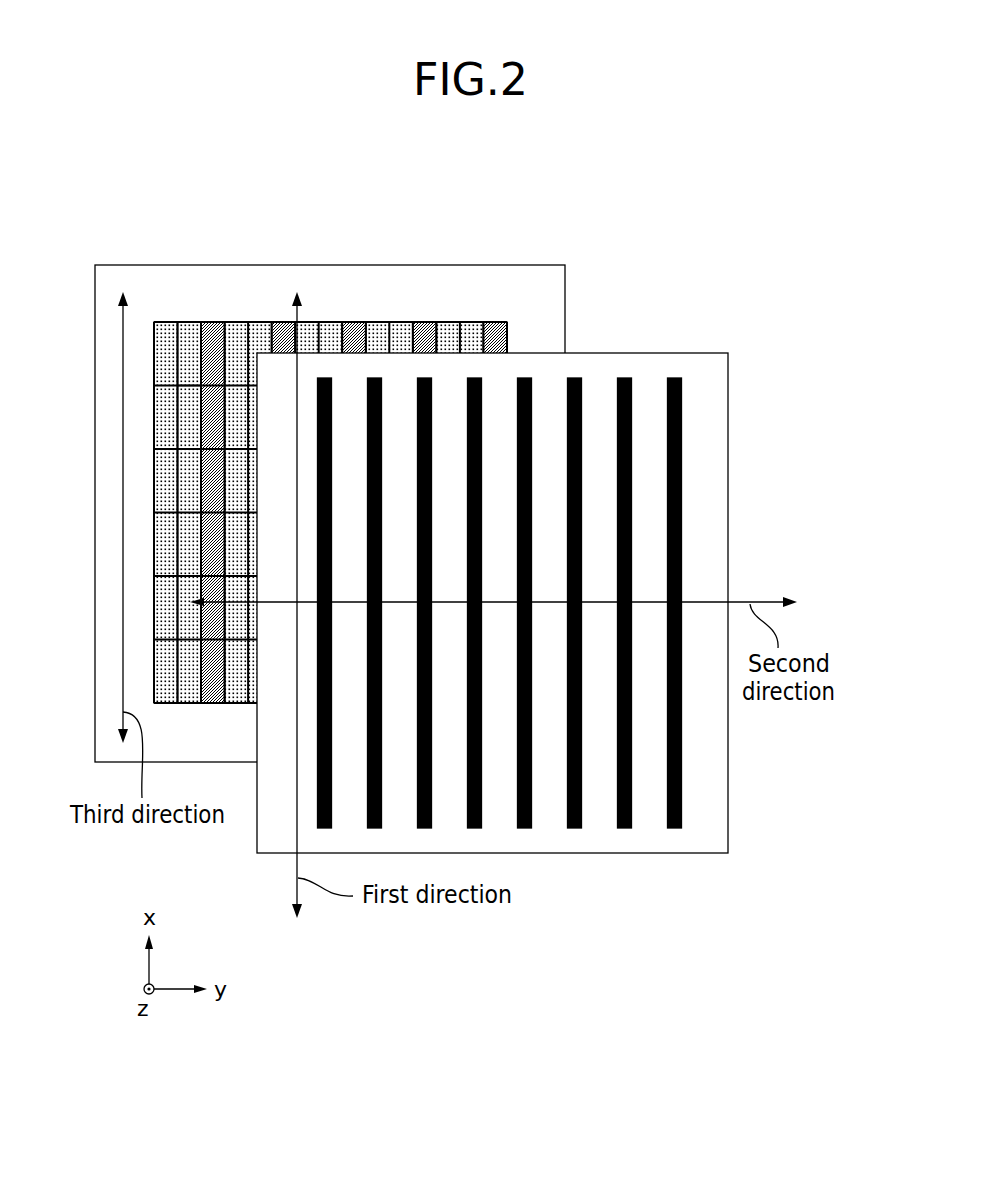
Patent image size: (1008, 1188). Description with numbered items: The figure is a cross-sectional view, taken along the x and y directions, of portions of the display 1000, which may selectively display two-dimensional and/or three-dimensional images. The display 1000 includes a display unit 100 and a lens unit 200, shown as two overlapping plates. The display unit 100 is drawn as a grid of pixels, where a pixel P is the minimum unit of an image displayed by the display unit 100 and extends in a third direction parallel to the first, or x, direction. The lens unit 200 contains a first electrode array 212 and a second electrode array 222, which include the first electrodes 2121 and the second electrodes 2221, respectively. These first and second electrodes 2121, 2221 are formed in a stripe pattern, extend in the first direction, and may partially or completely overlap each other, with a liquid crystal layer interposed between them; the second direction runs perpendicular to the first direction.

The display 1000 is at (492, 200).
The display unit 100 is at (330, 479).
The pixel P is at (190, 338).
The lens unit 200 is at (567, 593).
The first electrode array 212 is at (598, 603).
The second electrode array 222 is at (598, 603).
The first electrodes 2121 is at (683, 529).
The second electrodes 2221 is at (598, 603).